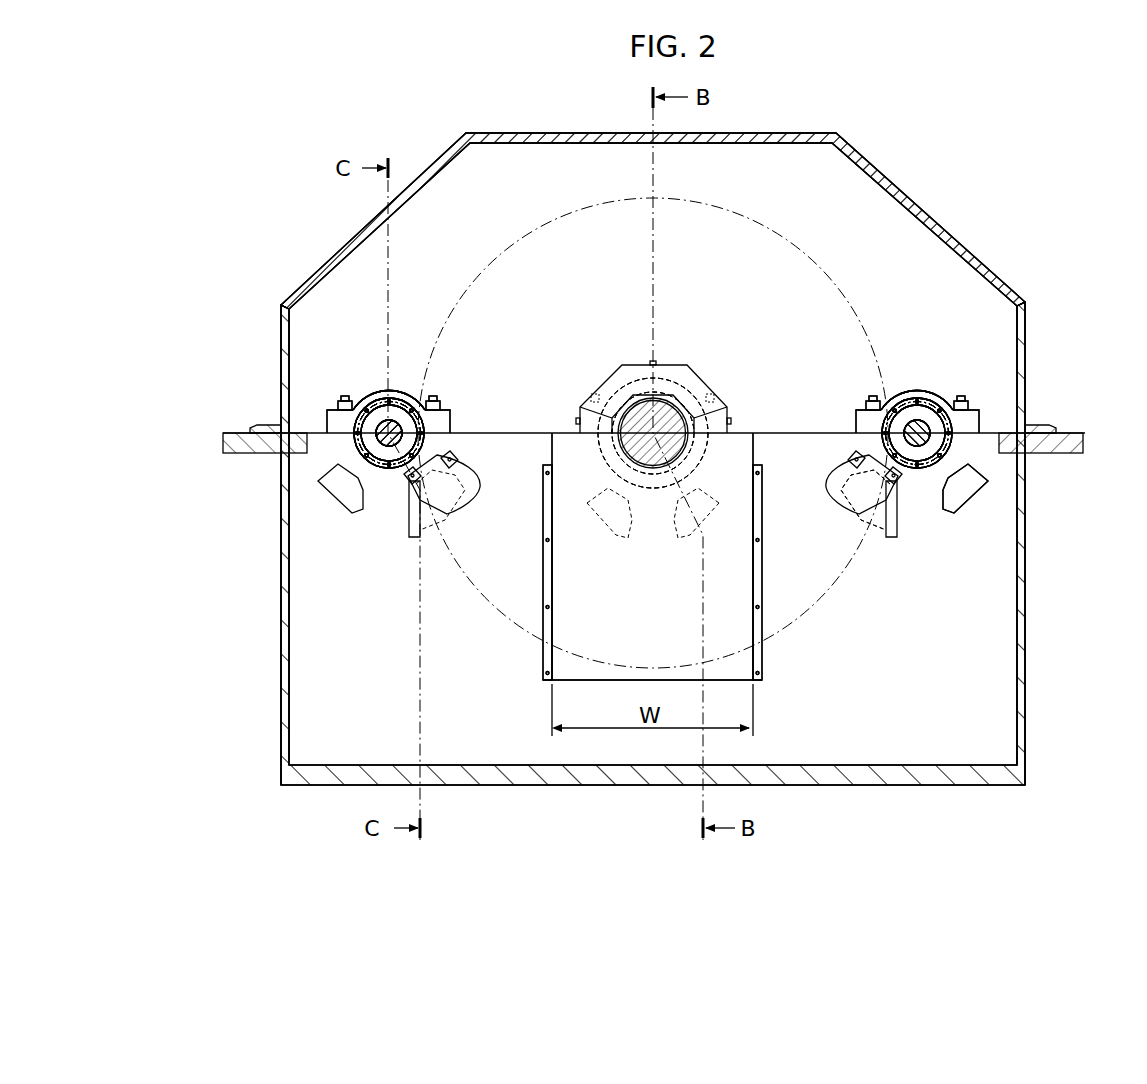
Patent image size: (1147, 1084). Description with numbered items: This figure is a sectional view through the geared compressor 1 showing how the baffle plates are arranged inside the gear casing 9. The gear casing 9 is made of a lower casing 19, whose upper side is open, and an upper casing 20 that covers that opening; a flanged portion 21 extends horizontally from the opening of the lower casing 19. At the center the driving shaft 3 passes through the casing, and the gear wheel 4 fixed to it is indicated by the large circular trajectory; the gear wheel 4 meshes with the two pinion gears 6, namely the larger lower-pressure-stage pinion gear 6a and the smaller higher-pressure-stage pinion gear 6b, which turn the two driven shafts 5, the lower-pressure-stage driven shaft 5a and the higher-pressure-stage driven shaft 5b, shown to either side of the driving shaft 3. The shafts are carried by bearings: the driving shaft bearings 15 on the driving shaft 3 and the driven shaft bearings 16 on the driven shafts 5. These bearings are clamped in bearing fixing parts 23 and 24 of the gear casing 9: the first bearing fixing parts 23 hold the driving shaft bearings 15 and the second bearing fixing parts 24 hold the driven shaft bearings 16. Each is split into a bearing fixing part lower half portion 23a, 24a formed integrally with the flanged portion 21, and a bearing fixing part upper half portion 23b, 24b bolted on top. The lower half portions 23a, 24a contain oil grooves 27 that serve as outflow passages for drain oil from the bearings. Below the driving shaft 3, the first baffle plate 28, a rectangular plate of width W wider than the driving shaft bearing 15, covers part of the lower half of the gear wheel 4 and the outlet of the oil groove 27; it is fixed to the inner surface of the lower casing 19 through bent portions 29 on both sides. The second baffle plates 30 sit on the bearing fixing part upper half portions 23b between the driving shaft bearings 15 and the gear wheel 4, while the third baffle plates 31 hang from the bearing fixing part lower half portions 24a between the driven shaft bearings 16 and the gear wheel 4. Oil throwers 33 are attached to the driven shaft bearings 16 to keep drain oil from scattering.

The geared compressor 1 is at (1059, 147).
The driving shaft 3 is at (620, 455).
The gear wheel 4 is at (690, 198).
The driven shafts 5 is at (647, 378).
The lower-pressure-stage driven shaft 5a is at (978, 410).
The higher-pressure-stage driven shaft 5b is at (345, 410).
The pinion gears 6 is at (651, 467).
The lower-pressure-stage pinion gear 6a is at (940, 455).
The higher-pressure-stage pinion gear 6b is at (365, 455).
The gear casing 9 is at (981, 251).
The driving shaft bearings 15 is at (695, 368).
The driven shaft bearings 16 is at (372, 400).
The lower casing 19 is at (1022, 622).
The upper casing 20 is at (893, 180).
The flanged portion 21 is at (1080, 443).
The first bearing fixing parts 23 is at (605, 425).
The bearing fixing part lower half portion 23a is at (870, 515).
The bearing fixing part upper half portion 23b is at (653, 433).
The second bearing fixing parts 24 is at (653, 429).
The bearing fixing part lower half portion 24a is at (353, 443).
The bearing fixing part upper half portion 24b is at (390, 424).
The oil grooves 27 is at (410, 500).
The first baffle plate 28 is at (760, 670).
The bent portions 29 is at (547, 670).
The second baffle plates 30 is at (630, 365).
The third baffle plates 31 is at (425, 536).
The oil throwers 33 is at (380, 413).